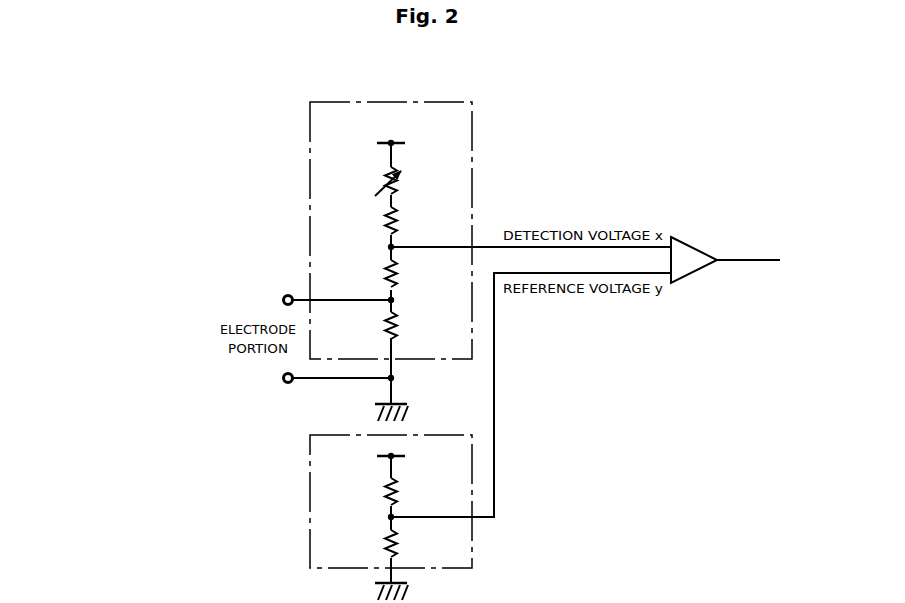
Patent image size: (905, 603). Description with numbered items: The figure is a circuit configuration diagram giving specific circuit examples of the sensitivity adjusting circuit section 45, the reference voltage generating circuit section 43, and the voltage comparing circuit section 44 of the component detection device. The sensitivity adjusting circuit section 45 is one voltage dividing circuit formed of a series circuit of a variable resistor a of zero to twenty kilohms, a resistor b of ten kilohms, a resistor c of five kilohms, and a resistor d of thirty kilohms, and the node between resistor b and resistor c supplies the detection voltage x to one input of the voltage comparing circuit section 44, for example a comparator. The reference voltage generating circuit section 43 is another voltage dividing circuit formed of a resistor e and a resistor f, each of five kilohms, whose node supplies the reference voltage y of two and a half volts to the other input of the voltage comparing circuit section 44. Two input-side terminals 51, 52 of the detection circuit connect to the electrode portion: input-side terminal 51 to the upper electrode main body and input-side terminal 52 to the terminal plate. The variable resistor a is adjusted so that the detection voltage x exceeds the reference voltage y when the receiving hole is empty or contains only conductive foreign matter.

The sensitivity adjusting circuit section 45 is at (309, 145).
The input-side terminal 52 is at (282, 297).
The input-side terminal 51 is at (282, 383).
The voltage comparing circuit section 44 is at (706, 287).
The reference voltage generating circuit section 43 is at (309, 471).